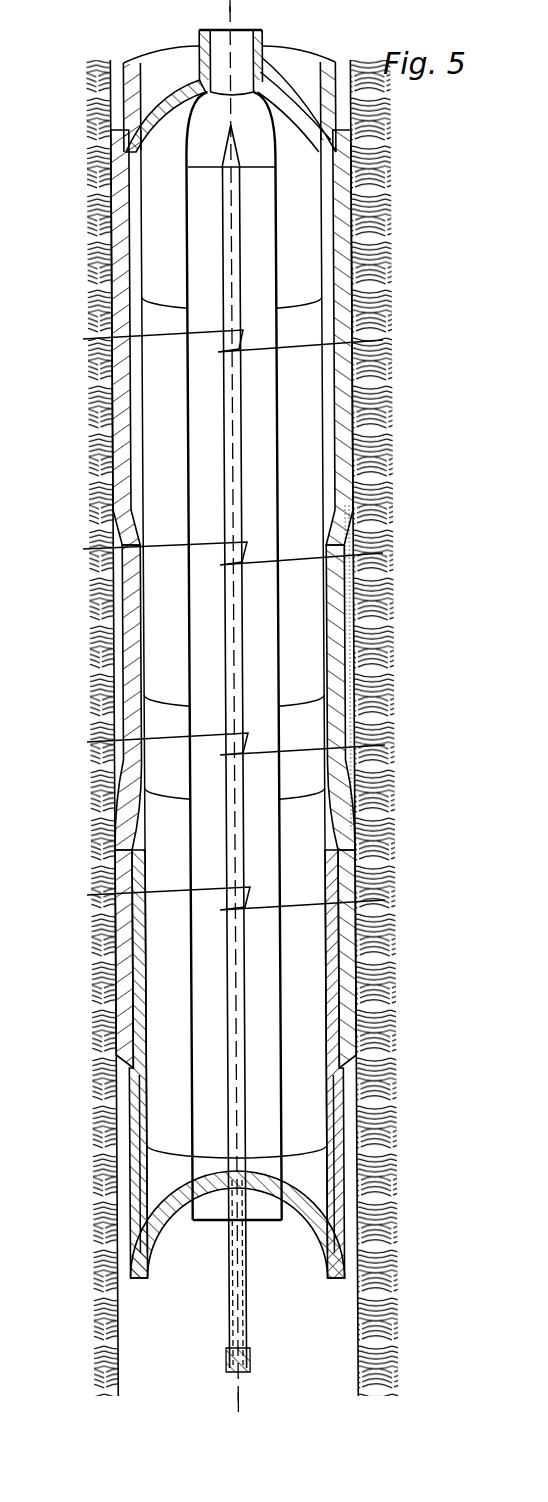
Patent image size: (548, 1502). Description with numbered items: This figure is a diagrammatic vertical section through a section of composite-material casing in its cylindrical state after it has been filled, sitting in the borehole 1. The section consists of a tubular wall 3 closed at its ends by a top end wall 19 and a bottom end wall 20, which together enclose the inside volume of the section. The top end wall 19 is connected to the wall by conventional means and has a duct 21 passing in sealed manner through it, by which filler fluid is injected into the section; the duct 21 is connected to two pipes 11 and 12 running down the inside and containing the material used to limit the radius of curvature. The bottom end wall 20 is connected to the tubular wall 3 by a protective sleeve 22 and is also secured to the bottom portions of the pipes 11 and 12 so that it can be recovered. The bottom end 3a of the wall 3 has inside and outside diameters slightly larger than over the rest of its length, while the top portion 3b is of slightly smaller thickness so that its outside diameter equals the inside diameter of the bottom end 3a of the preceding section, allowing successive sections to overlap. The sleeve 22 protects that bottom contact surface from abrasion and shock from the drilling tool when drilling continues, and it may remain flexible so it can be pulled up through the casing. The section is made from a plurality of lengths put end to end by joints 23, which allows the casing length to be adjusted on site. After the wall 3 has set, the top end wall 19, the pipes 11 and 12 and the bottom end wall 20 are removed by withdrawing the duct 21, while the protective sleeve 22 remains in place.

The borehole 1 is at (360, 1394).
The wall 3 is at (333, 743).
The bottom end of the wall 3a is at (343, 234).
The top portion of the wall 3b is at (143, 382).
The pipe 11 is at (203, 428).
The pipe 12 is at (262, 490).
The top end wall 19 is at (125, 108).
The bottom end wall 20 is at (302, 1350).
The duct 21 is at (352, 88).
The protective sleeve 22 is at (142, 1016).
The joints 23 is at (125, 636).